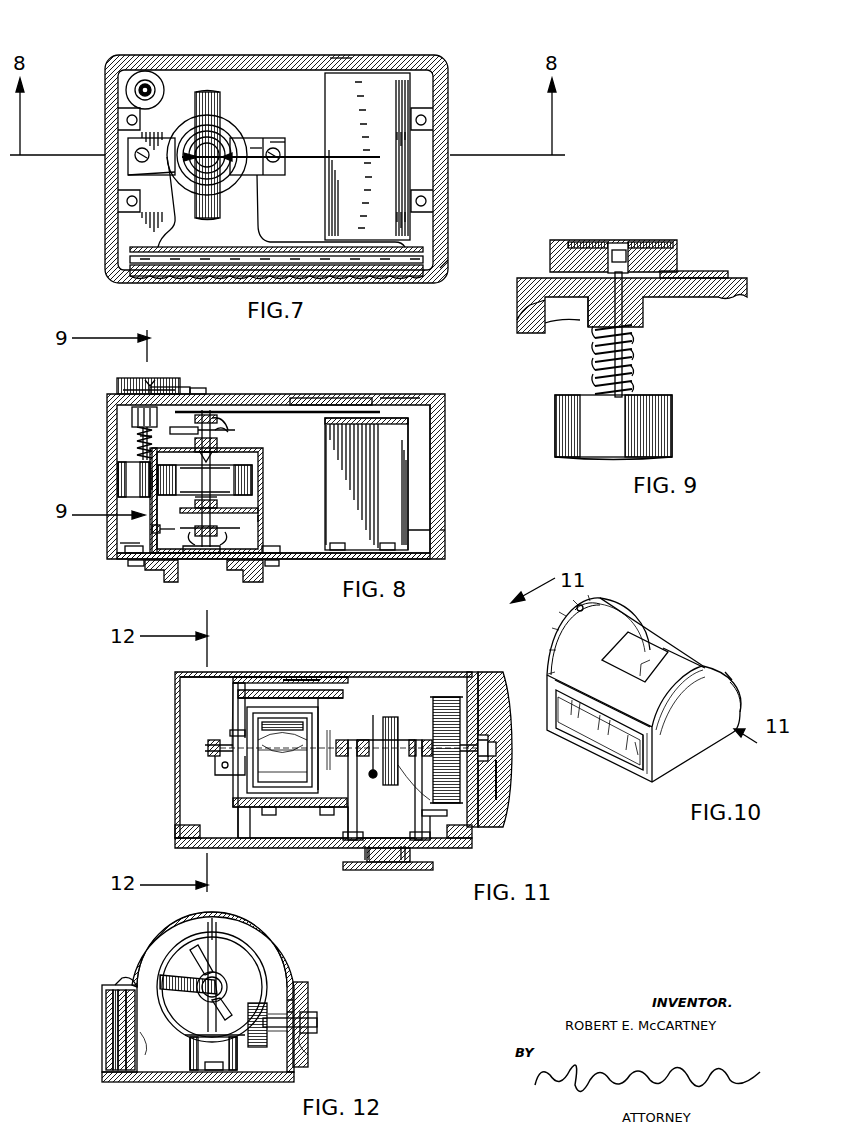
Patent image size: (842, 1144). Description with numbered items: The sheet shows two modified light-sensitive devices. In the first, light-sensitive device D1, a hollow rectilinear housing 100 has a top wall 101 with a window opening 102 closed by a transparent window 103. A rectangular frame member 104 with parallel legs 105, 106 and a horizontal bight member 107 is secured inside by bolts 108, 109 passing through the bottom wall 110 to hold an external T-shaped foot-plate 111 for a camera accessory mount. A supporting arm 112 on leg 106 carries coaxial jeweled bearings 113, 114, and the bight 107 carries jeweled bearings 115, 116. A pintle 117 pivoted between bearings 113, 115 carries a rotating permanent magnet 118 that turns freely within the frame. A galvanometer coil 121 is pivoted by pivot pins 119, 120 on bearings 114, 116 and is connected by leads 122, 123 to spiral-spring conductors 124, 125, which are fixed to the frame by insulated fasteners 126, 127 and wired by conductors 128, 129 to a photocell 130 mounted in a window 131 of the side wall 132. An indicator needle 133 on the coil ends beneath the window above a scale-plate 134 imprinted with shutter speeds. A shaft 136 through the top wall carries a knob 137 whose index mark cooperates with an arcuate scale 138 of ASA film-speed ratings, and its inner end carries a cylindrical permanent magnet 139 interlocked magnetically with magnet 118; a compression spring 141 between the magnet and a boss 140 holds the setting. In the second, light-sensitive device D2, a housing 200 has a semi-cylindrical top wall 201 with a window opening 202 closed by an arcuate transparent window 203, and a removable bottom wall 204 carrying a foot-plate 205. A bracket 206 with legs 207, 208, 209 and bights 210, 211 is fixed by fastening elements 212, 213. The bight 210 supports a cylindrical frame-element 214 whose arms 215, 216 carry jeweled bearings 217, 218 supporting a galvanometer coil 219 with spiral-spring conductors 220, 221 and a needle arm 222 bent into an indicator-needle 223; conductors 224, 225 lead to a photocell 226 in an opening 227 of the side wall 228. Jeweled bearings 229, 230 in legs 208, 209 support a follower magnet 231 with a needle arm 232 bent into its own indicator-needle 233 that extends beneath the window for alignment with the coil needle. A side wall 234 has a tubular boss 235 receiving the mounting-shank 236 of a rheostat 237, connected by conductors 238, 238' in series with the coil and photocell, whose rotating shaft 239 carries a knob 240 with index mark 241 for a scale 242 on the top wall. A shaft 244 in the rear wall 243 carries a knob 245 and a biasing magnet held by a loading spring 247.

In FIG. 7, the housing 100 is at (446, 124).
In FIG. 8, the housing 100 is at (447, 398).
In FIG. 8, the top wall 101 is at (435, 400).
In FIG. 9, the top wall 101 is at (738, 278).
In FIG. 8, the window opening 102 is at (405, 398).
In FIG. 8, the transparent window 103 is at (372, 400).
In FIG. 7, the frame member 104 is at (275, 140).
In FIG. 8, the frame member 104 is at (148, 523).
In FIG. 8, the leg 105 is at (157, 478).
In FIG. 8, the leg 106 is at (262, 497).
In FIG. 7, the bight member 107 is at (266, 138).
In FIG. 8, the bight member 107 is at (145, 440).
In FIG. 7, the bolt 108 is at (128, 155).
In FIG. 8, the bolt 108 is at (135, 568).
In FIG. 7, the bolt 109 is at (286, 155).
In FIG. 8, the bolt 109 is at (272, 575).
In FIG. 7, the bottom wall 110 is at (341, 57).
In FIG. 8, the bottom wall 110 is at (310, 560).
In FIG. 8, the foot-plate 111 is at (220, 577).
In FIG. 8, the supporting arm 112 is at (232, 512).
In FIG. 8, the jeweled bearing 113 is at (202, 502).
In FIG. 8, the jeweled bearing 114 is at (252, 517).
In FIG. 8, the jeweled bearing 115 is at (218, 448).
In FIG. 8, the jeweled bearing 116 is at (218, 437).
In FIG. 8, the pintle 117 is at (220, 458).
In FIG. 7, the rotating permanent magnet 118 is at (230, 122).
In FIG. 8, the rotating permanent magnet 118 is at (250, 480).
In FIG. 8, the pivot pin 119 is at (205, 560).
In FIG. 8, the pivot pin 120 is at (222, 432).
In FIG. 7, the galvanometer coil 121 is at (208, 95).
In FIG. 8, the galvanometer coil 121 is at (208, 415).
In FIG. 8, the lead 122 is at (175, 558).
In FIG. 8, the lead 123 is at (225, 420).
In FIG. 8, the spiral-spring conductor 124 is at (240, 528).
In FIG. 7, the spiral-spring conductor 125 is at (168, 177).
In FIG. 8, the spiral-spring conductor 125 is at (235, 432).
In FIG. 8, the insulated fastener 126 is at (152, 530).
In FIG. 8, the insulated fastener 127 is at (180, 390).
In FIG. 7, the conductor 128 is at (173, 226).
In FIG. 8, the conductor 128 is at (128, 549).
In FIG. 7, the conductor 129 is at (268, 233).
In FIG. 8, the conductor 129 is at (155, 380).
In FIG. 7, the photocell 130 is at (214, 250).
In FIG. 7, the window 131 is at (220, 274).
In FIG. 7, the side wall 132 is at (140, 284).
In FIG. 7, the indicator needle 133 is at (380, 157).
In FIG. 8, the indicator needle 133 is at (296, 412).
In FIG. 7, the scale-plate 134 is at (390, 84).
In FIG. 8, the scale-plate 134 is at (410, 420).
In FIG. 7, the shaft 136 is at (148, 84).
In FIG. 8, the shaft 136 is at (140, 432).
In FIG. 9, the shaft 136 is at (634, 350).
In FIG. 8, the knob 137 is at (140, 380).
In FIG. 9, the knob 137 is at (645, 242).
In FIG. 8, the arcuate scale 138 is at (198, 390).
In FIG. 9, the arcuate scale 138 is at (702, 270).
In FIG. 7, the cylindrical permanent magnet 139 is at (138, 78).
In FIG. 8, the cylindrical permanent magnet 139 is at (140, 470).
In FIG. 9, the cylindrical permanent magnet 139 is at (668, 405).
In FIG. 8, the boss 140 is at (147, 408).
In FIG. 9, the boss 140 is at (585, 325).
In FIG. 7, the compression spring 141 is at (151, 90).
In FIG. 8, the compression spring 141 is at (148, 448).
In FIG. 9, the compression spring 141 is at (634, 372).
In FIG. 7, the light-sensitive device D1 is at (448, 258).
In FIG. 8, the light-sensitive device D1 is at (445, 531).
In FIG. 10, the housing 200 is at (700, 740).
In FIG. 11, the housing 200 is at (178, 760).
In FIG. 10, the semi-cylindrical top wall 201 is at (665, 662).
In FIG. 11, the semi-cylindrical top wall 201 is at (190, 672).
In FIG. 10, the window opening 202 is at (635, 640).
In FIG. 11, the window opening 202 is at (232, 672).
In FIG. 12, the window opening 202 is at (166, 934).
In FIG. 10, the arcuate transparent window 203 is at (652, 662).
In FIG. 11, the arcuate transparent window 203 is at (252, 673).
In FIG. 12, the arcuate transparent window 203 is at (192, 910).
In FIG. 11, the bottom wall 204 is at (200, 847).
In FIG. 12, the bottom wall 204 is at (145, 1082).
In FIG. 11, the foot-plate 205 is at (395, 868).
In FIG. 11, the bracket 206 is at (226, 812).
In FIG. 12, the bracket 206 is at (230, 1082).
In FIG. 11, the leg 207 is at (250, 835).
In FIG. 11, the leg 208 is at (350, 828).
In FIG. 11, the leg 209 is at (430, 852).
In FIG. 11, the bight 210 is at (305, 815).
In FIG. 11, the bight 211 is at (370, 838).
In FIG. 11, the fastening element 212 is at (370, 863).
In FIG. 11, the fastening element 213 is at (403, 868).
In FIG. 12, the cylindrical frame-element 214 is at (165, 985).
In FIG. 11, the horizontal arm 215 is at (208, 748).
In FIG. 11, the horizontal arm 216 is at (362, 740).
In FIG. 11, the jeweled bearing 217 is at (220, 740).
In FIG. 11, the jeweled bearing 218 is at (340, 740).
In FIG. 11, the galvanometer coil 219 is at (247, 785).
In FIG. 12, the galvanometer coil 219 is at (222, 955).
In FIG. 11, the spiral-spring conductor 220 is at (232, 745).
In FIG. 12, the spiral-spring conductor 220 is at (230, 975).
In FIG. 11, the spiral-spring conductor 221 is at (318, 685).
In FIG. 11, the needle arm 222 is at (235, 690).
In FIG. 12, the needle arm 222 is at (214, 922).
In FIG. 11, the indicator-needle 223 is at (222, 680).
In FIG. 12, the conductor 224 is at (120, 1018).
In FIG. 12, the conductor 225 is at (148, 1055).
In FIG. 12, the photocell 226 is at (108, 1040).
In FIG. 10, the opening 227 is at (592, 745).
In FIG. 12, the opening 227 is at (113, 1052).
In FIG. 10, the side wall 228 is at (641, 772).
In FIG. 12, the side wall 228 is at (105, 1072).
In FIG. 11, the jeweled bearing 229 is at (390, 715).
In FIG. 11, the jeweled bearing 230 is at (410, 762).
In FIG. 11, the follower magnet 231 is at (447, 697).
In FIG. 11, the needle arm 232 is at (415, 740).
In FIG. 10, the pointer 233 is at (650, 650).
In FIG. 11, the pointer 233 is at (285, 680).
In FIG. 11, the side wall 234 is at (472, 833).
In FIG. 11, the tubular boss 235 is at (490, 760).
In FIG. 11, the mounting-shank 236 is at (492, 705).
In FIG. 11, the rheostat 237 is at (497, 778).
In FIG. 11, the conductor 238 is at (447, 840).
In FIG. 11, the conductor 238' is at (462, 723).
In FIG. 11, the rotating shaft 239 is at (484, 748).
In FIG. 10, the knob 240 is at (556, 630).
In FIG. 11, the knob 240 is at (510, 815).
In FIG. 10, the index mark 241 is at (585, 600).
In FIG. 10, the scale 242 is at (608, 610).
In FIG. 12, the rear wall 243 is at (290, 985).
In FIG. 12, the shaft 244 is at (312, 1018).
In FIG. 10, the knob 245 is at (742, 708).
In FIG. 12, the knob 245 is at (310, 1048).
In FIG. 12, the loading spring 247 is at (300, 1000).
In FIG. 10, the light-sensitive device D2 is at (733, 682).